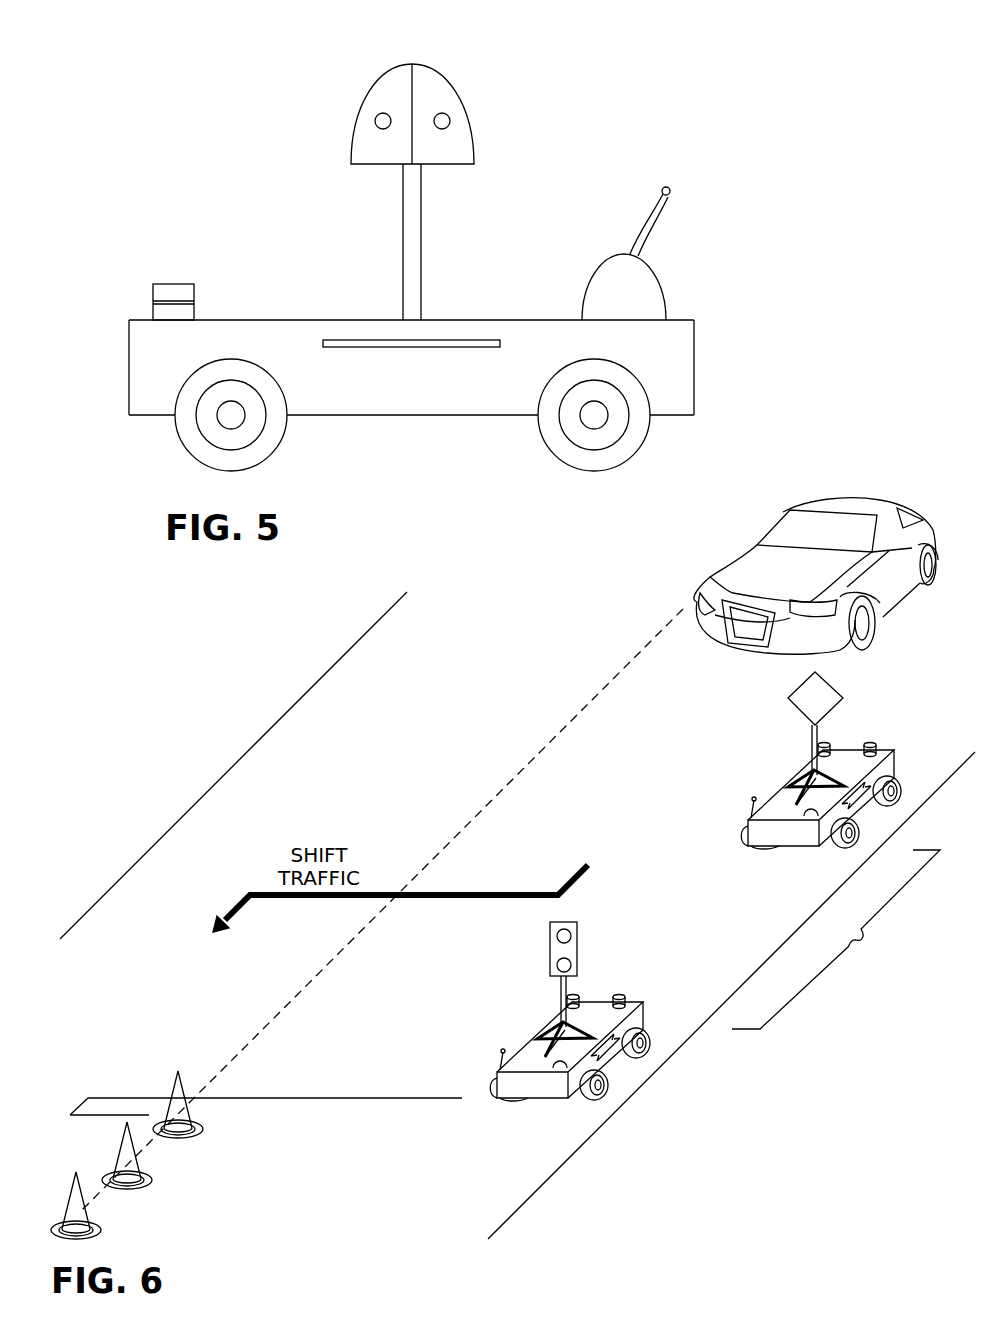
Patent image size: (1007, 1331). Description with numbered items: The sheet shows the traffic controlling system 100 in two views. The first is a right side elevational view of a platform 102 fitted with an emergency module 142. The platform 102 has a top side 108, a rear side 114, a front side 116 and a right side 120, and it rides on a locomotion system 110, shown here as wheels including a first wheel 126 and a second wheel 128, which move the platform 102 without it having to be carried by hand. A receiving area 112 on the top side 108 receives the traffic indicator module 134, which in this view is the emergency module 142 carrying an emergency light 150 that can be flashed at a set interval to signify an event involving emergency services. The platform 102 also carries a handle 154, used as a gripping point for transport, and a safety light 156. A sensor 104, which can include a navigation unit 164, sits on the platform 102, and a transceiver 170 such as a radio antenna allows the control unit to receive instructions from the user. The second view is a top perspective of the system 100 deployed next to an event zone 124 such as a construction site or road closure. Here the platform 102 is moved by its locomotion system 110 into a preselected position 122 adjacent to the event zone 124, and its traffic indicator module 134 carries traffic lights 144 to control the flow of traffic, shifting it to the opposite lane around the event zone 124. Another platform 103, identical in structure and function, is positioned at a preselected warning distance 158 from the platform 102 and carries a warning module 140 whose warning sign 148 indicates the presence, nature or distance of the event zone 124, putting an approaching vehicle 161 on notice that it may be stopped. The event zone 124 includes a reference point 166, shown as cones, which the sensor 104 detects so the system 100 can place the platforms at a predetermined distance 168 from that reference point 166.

In FIG. 5, the traffic controlling system 100 is at (232, 165).
In FIG. 6, the traffic controlling system 100 is at (665, 790).
In FIG. 6, the platform 102 is at (533, 1090).
In FIG. 6, the another platform 103 is at (821, 821).
In FIG. 5, the sensor 104 is at (668, 287).
In FIG. 5, the top side 108 is at (226, 318).
In FIG. 5, the locomotion system 110 is at (408, 415).
In FIG. 5, the receiving area 112 is at (362, 318).
In FIG. 5, the rear side 114 is at (700, 353).
In FIG. 6, the rear side 114 is at (553, 951).
In FIG. 5, the front side 116 is at (129, 367).
In FIG. 5, the right side 120 is at (367, 387).
In FIG. 6, the preselected position 122 is at (627, 1077).
In FIG. 6, the event zone 124 is at (395, 1177).
In FIG. 5, the first wheel 126 is at (642, 433).
In FIG. 5, the second wheel 128 is at (182, 425).
In FIG. 5, the traffic indicator module 134 is at (421, 89).
In FIG. 6, the traffic indicator module 134 is at (697, 824).
In FIG. 6, the warning module 140 is at (833, 710).
In FIG. 5, the emergency module 142 is at (455, 98).
In FIG. 6, the traffic lights 144 is at (579, 940).
In FIG. 6, the warning sign 148 is at (812, 700).
In FIG. 5, the emergency light 150 is at (372, 100).
In FIG. 5, the handle 154 is at (445, 348).
In FIG. 5, the safety light 156 is at (152, 293).
In FIG. 6, the preselected warning distance 158 is at (836, 939).
In FIG. 6, the approaching vehicle 161 is at (857, 495).
In FIG. 5, the navigation unit 164 is at (655, 288).
In FIG. 6, the reference point 166 is at (195, 1113).
In FIG. 6, the predetermined distance 168 is at (78, 1108).
In FIG. 5, the transceiver 170 is at (652, 203).